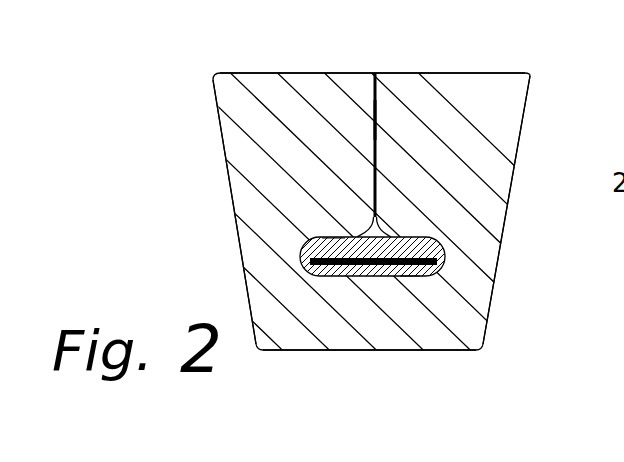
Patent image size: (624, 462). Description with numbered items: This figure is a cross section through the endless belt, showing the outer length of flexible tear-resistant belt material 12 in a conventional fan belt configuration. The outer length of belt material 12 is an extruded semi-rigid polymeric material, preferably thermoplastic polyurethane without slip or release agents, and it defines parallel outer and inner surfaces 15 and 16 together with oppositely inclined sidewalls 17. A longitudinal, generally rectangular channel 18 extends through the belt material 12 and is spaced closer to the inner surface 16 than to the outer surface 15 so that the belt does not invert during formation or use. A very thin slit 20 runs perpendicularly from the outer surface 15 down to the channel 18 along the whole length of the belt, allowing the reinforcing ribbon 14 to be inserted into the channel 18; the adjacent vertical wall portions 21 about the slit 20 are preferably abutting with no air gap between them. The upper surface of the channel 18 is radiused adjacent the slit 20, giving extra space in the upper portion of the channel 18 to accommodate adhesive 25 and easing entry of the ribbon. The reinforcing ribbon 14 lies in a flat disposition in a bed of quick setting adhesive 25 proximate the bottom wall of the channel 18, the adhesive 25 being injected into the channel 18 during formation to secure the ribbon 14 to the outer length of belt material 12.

The outer length of flexible tear-resistant belt material 12 is at (532, 76).
The reinforcing ribbon 14 is at (444, 261).
The outer surface 15 is at (486, 73).
The inner surface 16 is at (363, 350).
The sidewalls 17 is at (519, 140).
The channel 18 is at (391, 232).
The slit 20 is at (372, 73).
The vertical wall portions 21 is at (372, 127).
The adhesive 25 is at (312, 239).